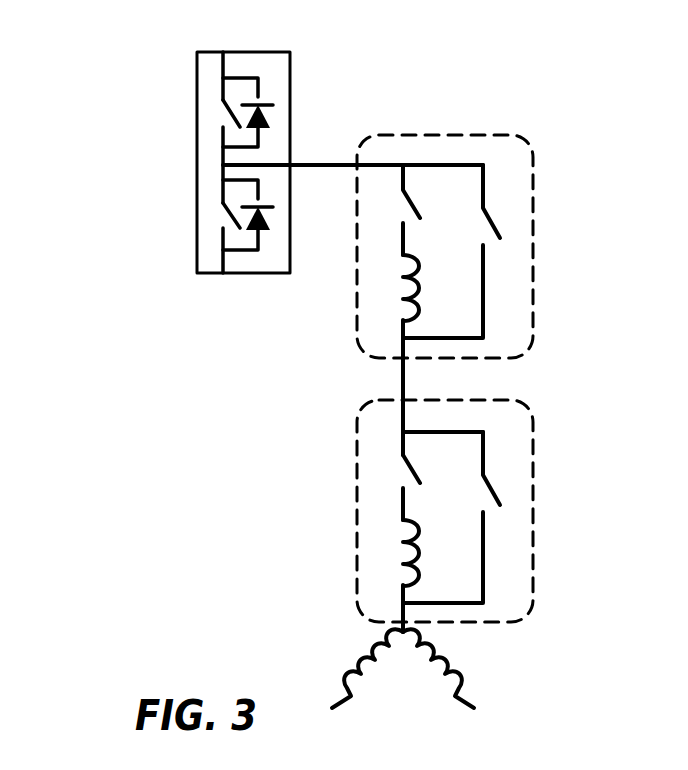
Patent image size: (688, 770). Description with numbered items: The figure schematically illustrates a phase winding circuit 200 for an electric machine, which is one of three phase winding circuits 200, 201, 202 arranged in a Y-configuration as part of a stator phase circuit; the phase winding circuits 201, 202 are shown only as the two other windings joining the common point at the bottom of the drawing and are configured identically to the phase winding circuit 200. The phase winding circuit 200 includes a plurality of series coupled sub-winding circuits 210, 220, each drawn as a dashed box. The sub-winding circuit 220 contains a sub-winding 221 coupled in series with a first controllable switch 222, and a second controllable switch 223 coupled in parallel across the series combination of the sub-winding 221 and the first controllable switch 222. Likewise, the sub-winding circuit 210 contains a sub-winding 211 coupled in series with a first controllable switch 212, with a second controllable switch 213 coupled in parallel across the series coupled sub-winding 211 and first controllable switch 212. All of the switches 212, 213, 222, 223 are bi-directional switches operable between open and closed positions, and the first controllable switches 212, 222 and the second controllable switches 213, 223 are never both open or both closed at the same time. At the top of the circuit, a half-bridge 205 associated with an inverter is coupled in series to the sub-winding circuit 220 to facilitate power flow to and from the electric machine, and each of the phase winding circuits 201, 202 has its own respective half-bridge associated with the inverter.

The phase winding circuit 200 is at (174, 66).
The half-bridge 205 is at (290, 78).
The sub-winding circuit 220 is at (533, 178).
The sub-winding 221 is at (418, 280).
The first controllable switch 222 is at (408, 202).
The second controllable switch 223 is at (500, 238).
The sub-winding circuit 210 is at (533, 445).
The sub-winding 211 is at (418, 545).
The first controllable switch 212 is at (408, 468).
The second controllable switch 213 is at (500, 503).
The phase winding circuit 201 is at (347, 665).
The phase winding circuit 202 is at (470, 678).